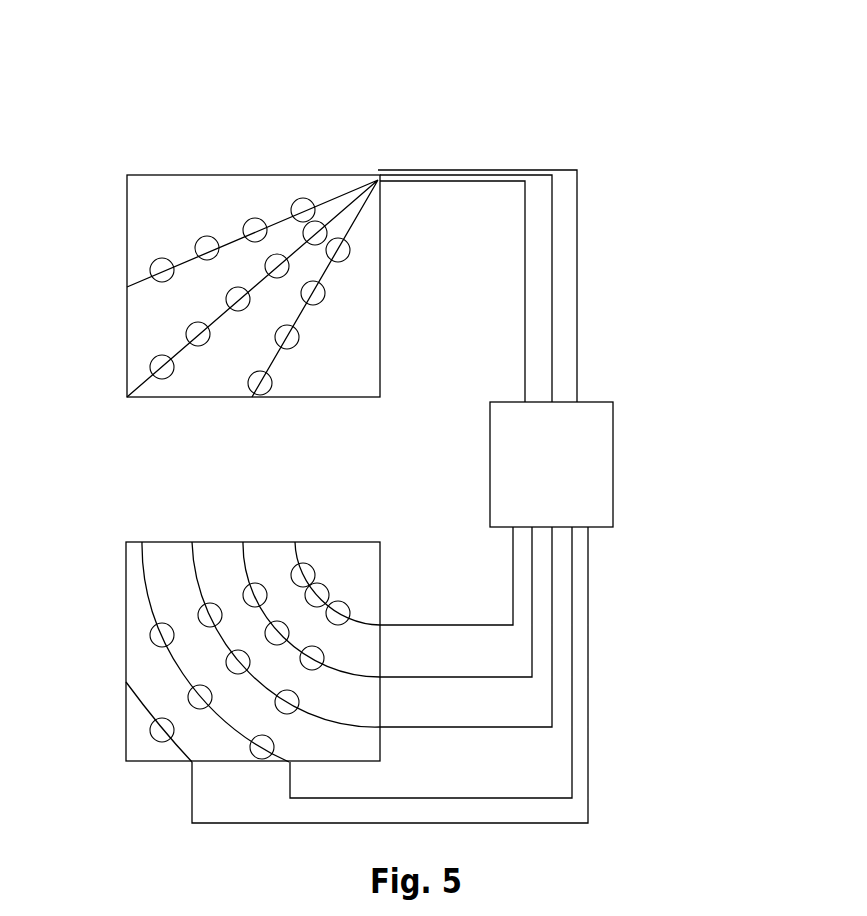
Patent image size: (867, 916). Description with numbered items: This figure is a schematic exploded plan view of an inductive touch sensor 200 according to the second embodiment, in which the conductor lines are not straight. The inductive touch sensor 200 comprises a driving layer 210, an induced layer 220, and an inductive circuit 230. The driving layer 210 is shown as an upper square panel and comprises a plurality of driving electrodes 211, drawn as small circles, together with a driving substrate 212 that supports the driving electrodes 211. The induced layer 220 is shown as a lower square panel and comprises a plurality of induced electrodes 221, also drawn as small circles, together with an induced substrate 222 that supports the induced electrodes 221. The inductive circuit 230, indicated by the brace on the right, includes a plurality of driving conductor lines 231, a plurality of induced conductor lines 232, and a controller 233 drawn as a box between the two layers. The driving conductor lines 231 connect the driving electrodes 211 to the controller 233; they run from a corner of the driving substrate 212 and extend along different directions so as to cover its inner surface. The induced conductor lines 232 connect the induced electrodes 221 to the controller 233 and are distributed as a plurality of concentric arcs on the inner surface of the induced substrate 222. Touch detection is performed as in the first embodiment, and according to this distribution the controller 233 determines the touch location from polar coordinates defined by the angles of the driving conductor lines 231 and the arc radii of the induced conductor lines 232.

The inductive touch sensor 200 is at (143, 93).
The driving layer 210 is at (116, 212).
The driving electrodes 211 is at (303, 205).
The driving substrate 212 is at (177, 185).
The induced layer 220 is at (118, 578).
The induced electrodes 221 is at (303, 575).
The induced substrate 222 is at (370, 750).
The inductive circuit 230 is at (693, 268).
The driving conductor lines 231 is at (580, 285).
The induced conductor lines 232 is at (588, 698).
The controller 233 is at (590, 467).